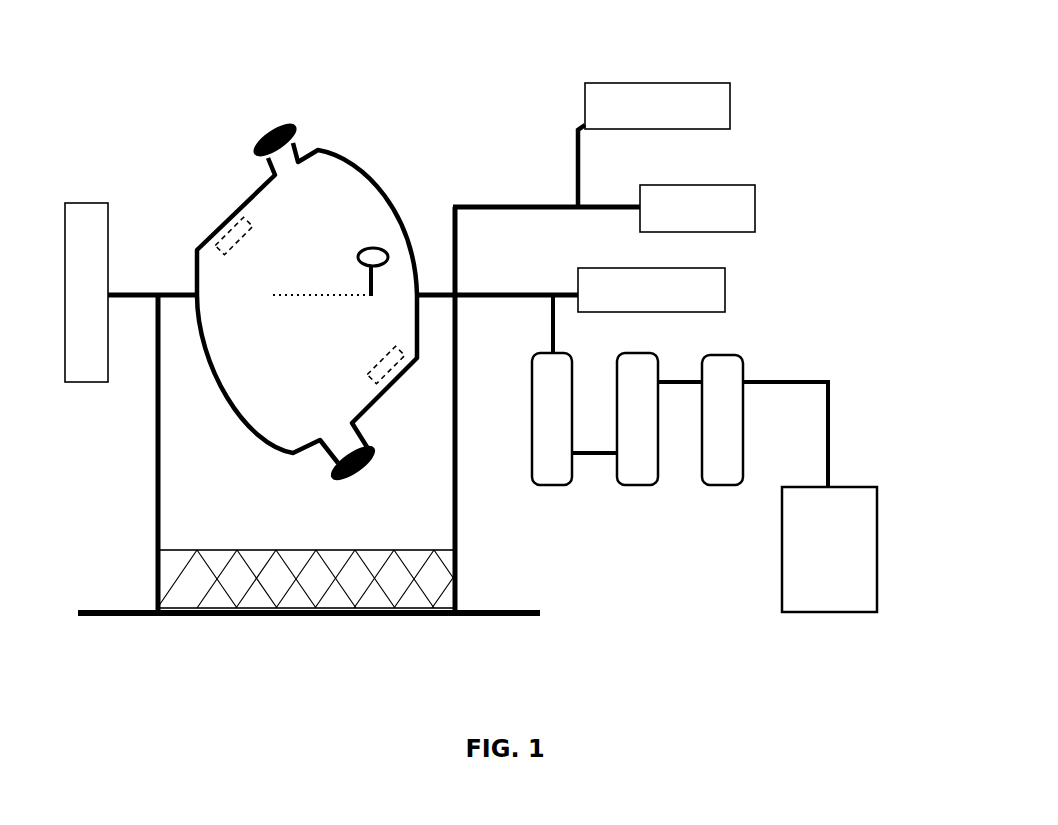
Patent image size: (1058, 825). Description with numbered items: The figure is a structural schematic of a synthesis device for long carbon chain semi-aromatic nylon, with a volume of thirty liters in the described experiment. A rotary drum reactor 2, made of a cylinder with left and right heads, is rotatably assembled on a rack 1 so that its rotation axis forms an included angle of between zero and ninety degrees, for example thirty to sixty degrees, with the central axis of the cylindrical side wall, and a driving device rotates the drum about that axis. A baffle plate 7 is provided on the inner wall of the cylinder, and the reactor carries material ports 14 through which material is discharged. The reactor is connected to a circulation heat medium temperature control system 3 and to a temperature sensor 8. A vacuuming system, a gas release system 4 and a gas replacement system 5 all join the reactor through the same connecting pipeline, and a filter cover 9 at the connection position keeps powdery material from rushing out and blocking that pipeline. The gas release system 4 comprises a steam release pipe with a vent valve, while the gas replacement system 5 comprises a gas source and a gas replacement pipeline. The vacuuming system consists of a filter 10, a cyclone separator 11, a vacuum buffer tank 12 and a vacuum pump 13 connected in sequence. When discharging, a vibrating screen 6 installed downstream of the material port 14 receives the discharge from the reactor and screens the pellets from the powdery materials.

The rack 1 is at (157, 463).
The rotary drum reactor 2 is at (253, 197).
The circulation heat medium temperature control system 3 is at (93, 210).
The gas release system 4 is at (753, 203).
The gas replacement system 5 is at (713, 90).
The vibrating screen 6 is at (257, 617).
The baffle plate 7 is at (223, 230).
The temperature sensor 8 is at (717, 287).
The filter cover 9 is at (376, 248).
The filter 10 is at (553, 468).
The cyclone separator 11 is at (637, 468).
The vacuum buffer tank 12 is at (725, 472).
The vacuum pump 13 is at (872, 562).
The material port 14 is at (287, 122).